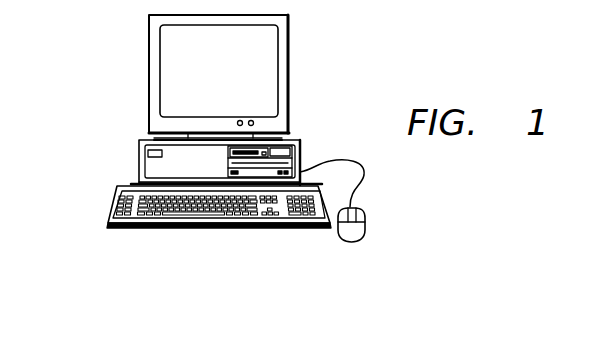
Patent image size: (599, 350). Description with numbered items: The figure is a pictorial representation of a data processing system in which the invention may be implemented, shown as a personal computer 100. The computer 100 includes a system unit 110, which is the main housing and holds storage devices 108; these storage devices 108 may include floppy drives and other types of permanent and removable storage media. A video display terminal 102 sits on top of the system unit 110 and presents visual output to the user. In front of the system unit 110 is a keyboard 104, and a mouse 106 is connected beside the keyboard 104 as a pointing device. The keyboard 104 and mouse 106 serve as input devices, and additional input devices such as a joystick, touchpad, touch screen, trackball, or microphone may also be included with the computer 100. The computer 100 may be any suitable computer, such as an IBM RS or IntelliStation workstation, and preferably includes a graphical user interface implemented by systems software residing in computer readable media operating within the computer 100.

The computer 100 is at (88, 62).
The video display terminal 102 is at (289, 73).
The keyboard 104 is at (133, 231).
The mouse 106 is at (355, 242).
The storage devices 108 is at (285, 157).
The system unit 110 is at (139, 152).